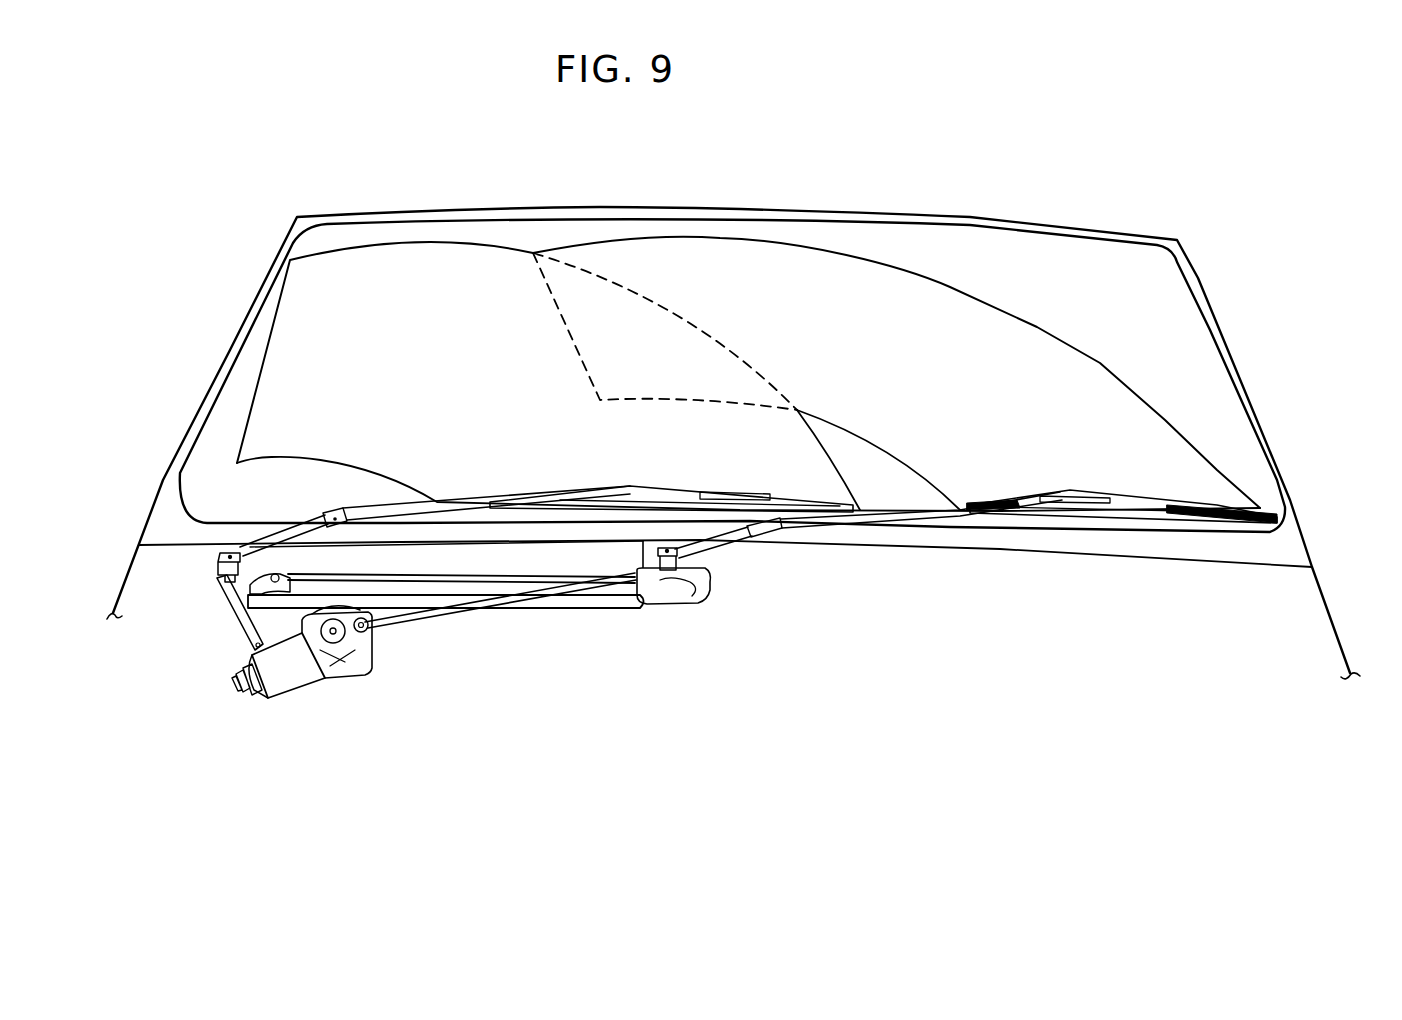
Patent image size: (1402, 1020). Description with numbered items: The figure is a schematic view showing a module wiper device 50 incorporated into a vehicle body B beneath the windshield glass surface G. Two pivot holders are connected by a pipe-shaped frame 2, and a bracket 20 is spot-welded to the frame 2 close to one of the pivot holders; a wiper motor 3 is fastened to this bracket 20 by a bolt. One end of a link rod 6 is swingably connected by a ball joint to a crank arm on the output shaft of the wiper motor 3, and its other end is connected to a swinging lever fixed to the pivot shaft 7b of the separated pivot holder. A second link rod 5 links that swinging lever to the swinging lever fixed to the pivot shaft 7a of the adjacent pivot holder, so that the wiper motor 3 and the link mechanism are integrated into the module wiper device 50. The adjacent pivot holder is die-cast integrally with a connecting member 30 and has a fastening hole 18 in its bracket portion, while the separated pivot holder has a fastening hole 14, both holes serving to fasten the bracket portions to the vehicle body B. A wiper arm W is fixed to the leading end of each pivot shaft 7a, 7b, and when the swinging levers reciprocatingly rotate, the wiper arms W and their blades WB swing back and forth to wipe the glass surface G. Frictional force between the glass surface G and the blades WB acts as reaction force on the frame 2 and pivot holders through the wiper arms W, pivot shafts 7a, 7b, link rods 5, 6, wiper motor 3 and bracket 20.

The glass surface G is at (967, 237).
The wiper arm W is at (460, 501).
The blade WB is at (753, 493).
The vehicle body B is at (123, 588).
The pivot shaft 7a is at (228, 553).
The pivot shaft 7b is at (647, 548).
The fastening hole 18 is at (277, 577).
The connecting member 30 is at (227, 607).
The wiper motor 3 is at (288, 677).
The bracket 20 is at (348, 670).
The link rod 5 is at (450, 580).
The link rod 6 is at (423, 613).
The pipe-shaped frame 2 is at (580, 600).
The fastening hole 14 is at (694, 593).
The module wiper device 50 is at (433, 638).